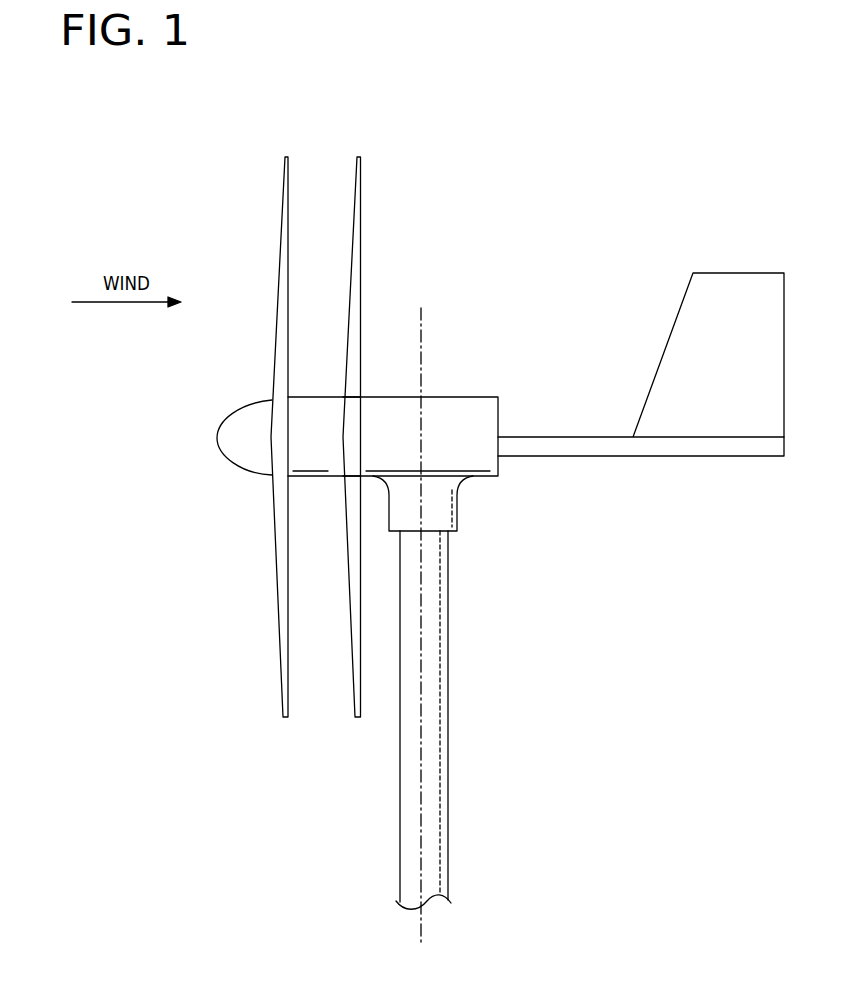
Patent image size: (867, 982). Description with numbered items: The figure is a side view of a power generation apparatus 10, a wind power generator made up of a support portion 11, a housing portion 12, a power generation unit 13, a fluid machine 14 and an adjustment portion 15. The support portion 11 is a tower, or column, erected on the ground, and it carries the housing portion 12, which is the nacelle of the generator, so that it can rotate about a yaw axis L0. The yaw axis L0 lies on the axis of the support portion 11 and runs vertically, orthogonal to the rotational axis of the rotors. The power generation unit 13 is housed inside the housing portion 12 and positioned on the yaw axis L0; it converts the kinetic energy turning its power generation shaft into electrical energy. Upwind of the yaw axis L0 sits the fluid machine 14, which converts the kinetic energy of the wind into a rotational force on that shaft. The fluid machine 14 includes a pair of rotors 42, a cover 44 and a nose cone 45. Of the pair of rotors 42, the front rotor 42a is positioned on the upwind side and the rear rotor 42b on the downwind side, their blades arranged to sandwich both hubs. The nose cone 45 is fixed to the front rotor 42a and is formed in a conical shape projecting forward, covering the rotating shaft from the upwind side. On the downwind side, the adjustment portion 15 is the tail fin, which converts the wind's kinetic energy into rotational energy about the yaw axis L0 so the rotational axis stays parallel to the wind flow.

The power generation apparatus 10 is at (712, 138).
The support portion 11 is at (441, 843).
The housing portion 12 is at (473, 405).
The power generation unit 13 is at (435, 412).
The yaw axis L0 is at (421, 330).
The fluid machine 14 is at (222, 186).
The adjustment portion 15 is at (738, 457).
The pair of rotors 42 is at (285, 469).
The front rotor 42a is at (282, 692).
The rear rotor 42b is at (355, 692).
The cover 44 is at (317, 418).
The nose cone 45 is at (232, 457).